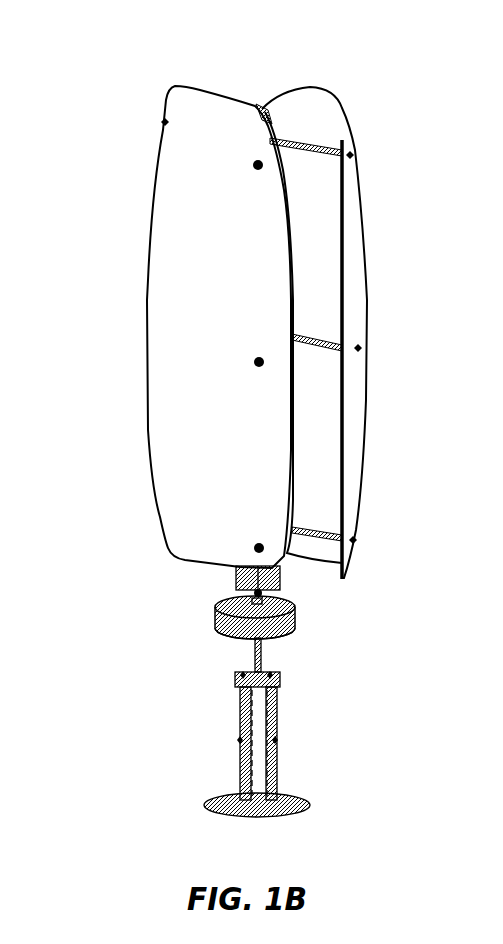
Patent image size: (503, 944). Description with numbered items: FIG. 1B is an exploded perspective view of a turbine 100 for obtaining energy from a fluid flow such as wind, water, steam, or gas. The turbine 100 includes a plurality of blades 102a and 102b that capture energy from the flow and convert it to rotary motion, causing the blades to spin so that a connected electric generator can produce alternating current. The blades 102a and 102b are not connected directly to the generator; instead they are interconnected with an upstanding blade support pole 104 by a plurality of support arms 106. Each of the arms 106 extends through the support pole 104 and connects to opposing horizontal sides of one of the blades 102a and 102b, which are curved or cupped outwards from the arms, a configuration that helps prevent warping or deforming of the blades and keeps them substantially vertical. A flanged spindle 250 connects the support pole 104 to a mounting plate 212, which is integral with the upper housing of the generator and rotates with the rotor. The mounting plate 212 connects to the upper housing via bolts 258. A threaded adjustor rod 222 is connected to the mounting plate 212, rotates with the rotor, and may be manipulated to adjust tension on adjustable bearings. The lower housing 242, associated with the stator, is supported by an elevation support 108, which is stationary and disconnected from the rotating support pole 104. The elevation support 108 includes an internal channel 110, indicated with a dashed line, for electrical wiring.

The turbine 100 is at (147, 41).
The blade 102a is at (250, 304).
The blade 102b is at (342, 233).
The blade support pole 104 is at (310, 66).
The support arms 106 is at (324, 165).
The flanged spindle 250 is at (178, 573).
The bolts 258 is at (169, 601).
The mounting plate 212 is at (325, 634).
The lower housing 242 is at (325, 671).
The threaded adjustor rod 222 is at (182, 650).
The elevation support 108 is at (187, 735).
The channel 110 is at (204, 775).